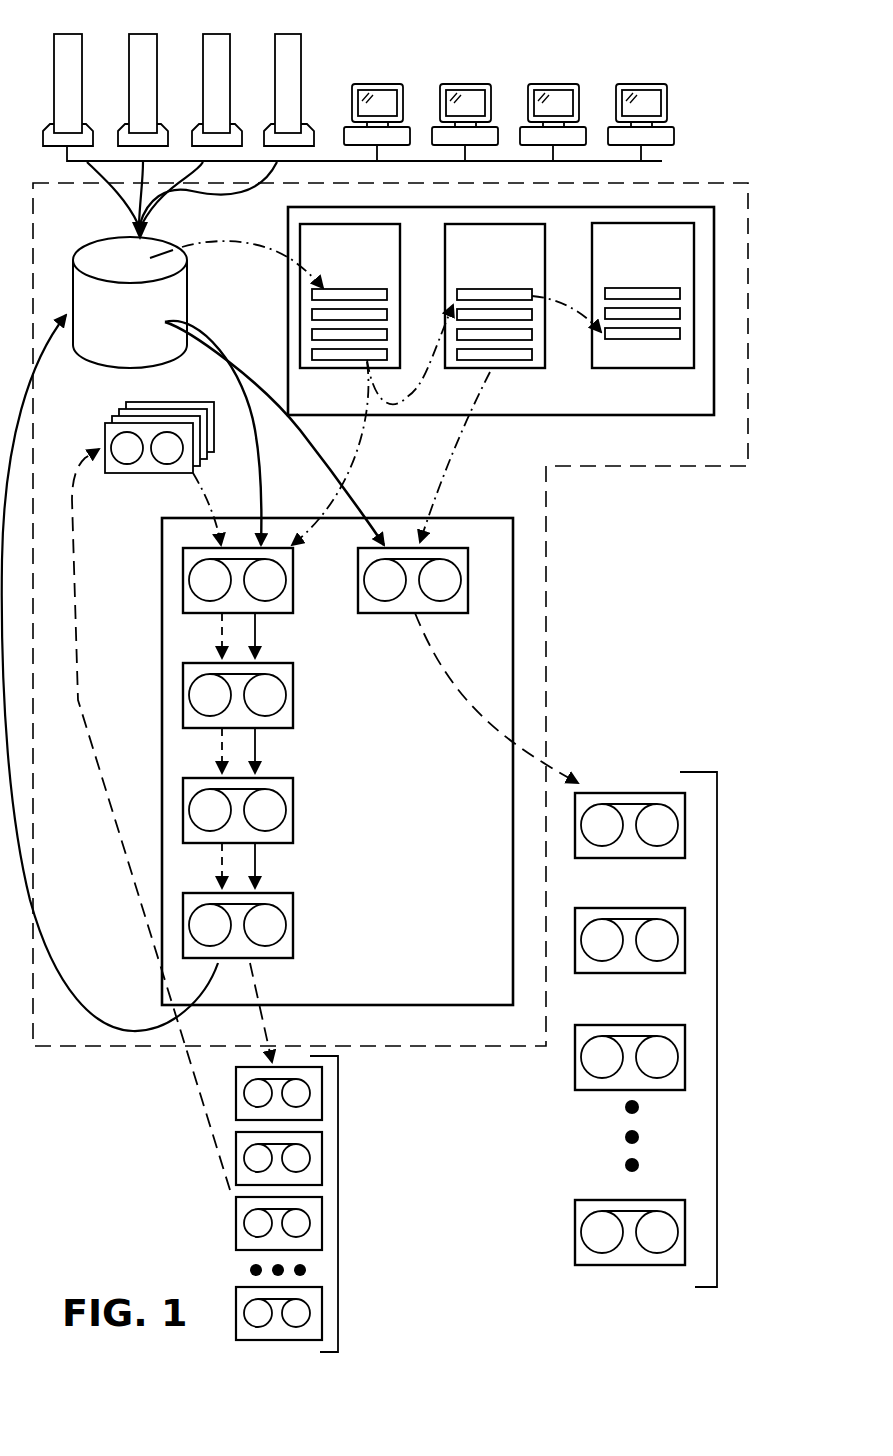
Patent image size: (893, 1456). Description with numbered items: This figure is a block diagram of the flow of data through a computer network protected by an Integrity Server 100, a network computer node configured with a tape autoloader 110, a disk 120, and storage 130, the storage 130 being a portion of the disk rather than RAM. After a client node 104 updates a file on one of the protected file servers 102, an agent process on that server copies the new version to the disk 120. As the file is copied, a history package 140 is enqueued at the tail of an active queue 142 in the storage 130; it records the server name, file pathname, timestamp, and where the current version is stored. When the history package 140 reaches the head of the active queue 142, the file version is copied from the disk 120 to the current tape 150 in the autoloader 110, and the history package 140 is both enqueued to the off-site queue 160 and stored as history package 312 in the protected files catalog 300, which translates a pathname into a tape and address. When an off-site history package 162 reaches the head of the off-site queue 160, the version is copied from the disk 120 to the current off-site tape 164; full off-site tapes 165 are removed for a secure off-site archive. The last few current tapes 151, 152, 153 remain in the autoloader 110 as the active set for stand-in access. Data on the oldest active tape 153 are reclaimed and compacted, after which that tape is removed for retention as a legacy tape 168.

The Integrity Server 100 is at (696, 185).
The file servers 102 is at (301, 27).
The client node 104 is at (650, 74).
The tape autoloader 110 is at (415, 958).
The disk 120 is at (177, 308).
The storage 130 is at (692, 405).
The history package 140 is at (408, 332).
The active queue 142 is at (365, 286).
The current tape 150 is at (293, 584).
The active tape 151 is at (293, 686).
The active tape 152 is at (293, 802).
The oldest active tape 153 is at (293, 918).
The off-site queue 160 is at (527, 286).
The off-site history package 162 is at (532, 335).
The current off-site tape 164 is at (468, 600).
The off-site tapes 165 is at (717, 1008).
The legacy tape 168 is at (338, 1192).
The protected files catalog 300 is at (627, 275).
The history package 312 is at (641, 340).